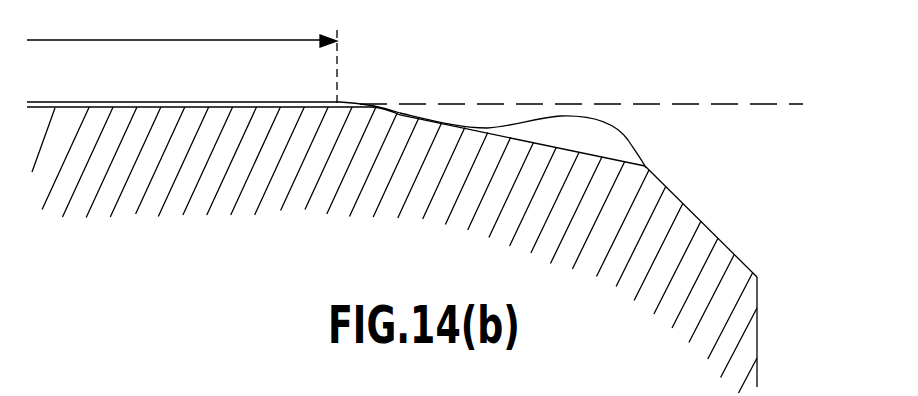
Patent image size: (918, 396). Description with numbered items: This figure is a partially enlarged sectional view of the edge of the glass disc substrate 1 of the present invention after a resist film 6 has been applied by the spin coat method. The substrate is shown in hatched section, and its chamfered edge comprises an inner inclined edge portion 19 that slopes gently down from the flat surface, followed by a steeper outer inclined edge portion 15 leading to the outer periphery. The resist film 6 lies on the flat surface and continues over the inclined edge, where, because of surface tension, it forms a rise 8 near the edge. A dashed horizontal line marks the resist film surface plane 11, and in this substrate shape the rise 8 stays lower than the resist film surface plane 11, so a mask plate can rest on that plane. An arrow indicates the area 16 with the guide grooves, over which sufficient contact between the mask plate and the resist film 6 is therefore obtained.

The glass disc substrate 1 is at (748, 344).
The resist film 6 is at (78, 103).
The rise 8 is at (620, 143).
The resist film surface plane 11 is at (795, 104).
The outer inclined edge portion 15 is at (716, 240).
The area with the guide grooves 16 is at (198, 41).
The inner inclined edge portion 19 is at (545, 152).